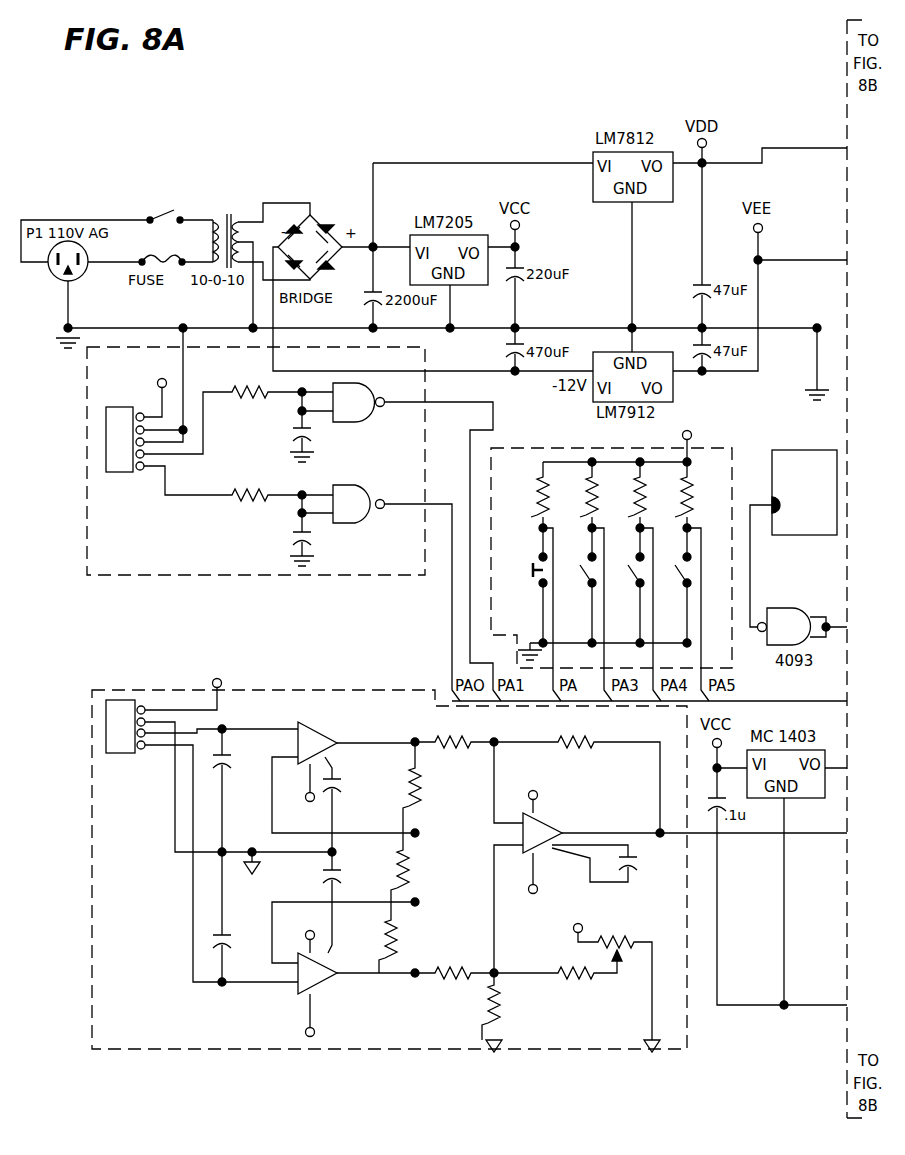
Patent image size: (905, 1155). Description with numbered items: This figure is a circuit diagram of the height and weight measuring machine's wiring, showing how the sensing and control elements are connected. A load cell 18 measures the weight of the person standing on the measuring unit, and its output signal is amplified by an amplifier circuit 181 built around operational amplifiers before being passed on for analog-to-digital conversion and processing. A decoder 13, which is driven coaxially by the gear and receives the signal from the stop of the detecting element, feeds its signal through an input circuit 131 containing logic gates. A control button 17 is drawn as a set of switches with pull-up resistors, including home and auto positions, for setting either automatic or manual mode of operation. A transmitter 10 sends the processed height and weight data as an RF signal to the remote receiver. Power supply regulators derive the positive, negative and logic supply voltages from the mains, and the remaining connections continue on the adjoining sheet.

The transmitter 10 is at (784, 537).
The decoder 13 is at (114, 407).
The control button 17 is at (714, 444).
The load cell 18 is at (106, 742).
The input circuit 131 is at (221, 585).
The amplifier circuit 181 is at (88, 880).